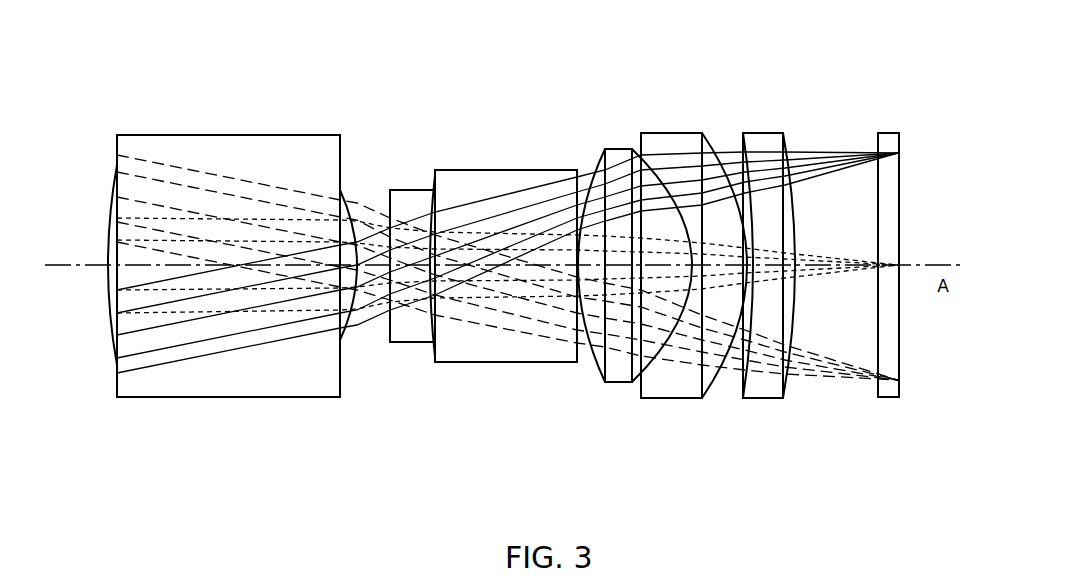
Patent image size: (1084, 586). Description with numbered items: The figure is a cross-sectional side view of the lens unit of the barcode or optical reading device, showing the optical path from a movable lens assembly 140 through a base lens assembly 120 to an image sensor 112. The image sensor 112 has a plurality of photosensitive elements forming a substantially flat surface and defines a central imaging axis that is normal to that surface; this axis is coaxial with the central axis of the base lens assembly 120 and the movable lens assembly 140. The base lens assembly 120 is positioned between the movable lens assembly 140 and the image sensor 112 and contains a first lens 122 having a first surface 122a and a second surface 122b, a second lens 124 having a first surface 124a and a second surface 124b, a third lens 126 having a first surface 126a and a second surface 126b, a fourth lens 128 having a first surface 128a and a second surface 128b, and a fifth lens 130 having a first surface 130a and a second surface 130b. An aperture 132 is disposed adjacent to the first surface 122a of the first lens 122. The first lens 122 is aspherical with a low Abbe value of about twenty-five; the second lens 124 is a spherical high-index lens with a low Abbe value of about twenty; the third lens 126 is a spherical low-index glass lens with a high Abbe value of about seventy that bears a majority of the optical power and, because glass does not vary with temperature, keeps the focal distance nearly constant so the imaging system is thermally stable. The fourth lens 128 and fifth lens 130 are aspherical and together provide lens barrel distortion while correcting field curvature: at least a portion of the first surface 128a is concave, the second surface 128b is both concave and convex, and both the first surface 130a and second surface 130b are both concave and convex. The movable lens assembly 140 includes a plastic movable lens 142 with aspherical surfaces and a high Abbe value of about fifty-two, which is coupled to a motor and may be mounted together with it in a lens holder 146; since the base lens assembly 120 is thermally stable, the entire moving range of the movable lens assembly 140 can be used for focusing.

The image sensor 112 is at (893, 201).
The base lens assembly 120 is at (719, 71).
The first lens 122 is at (418, 195).
The first surface of first lens 122a is at (389, 320).
The second surface of first lens 122b is at (431, 345).
The second lens 124 is at (508, 178).
The first surface of second lens 124a is at (431, 356).
The second surface of second lens 124b is at (576, 362).
The third lens 126 is at (617, 157).
The first surface of third lens 126a is at (604, 383).
The second surface of third lens 126b is at (633, 384).
The fourth lens 128 is at (672, 141).
The first surface of fourth lens 128a is at (640, 399).
The second surface of fourth lens 128b is at (705, 398).
The fifth lens 130 is at (763, 141).
The first surface of fifth lens 130a is at (744, 400).
The second surface of fifth lens 130b is at (788, 391).
The aperture 132 is at (385, 262).
The movable lens assembly 140 is at (198, 410).
The movable lens 142 is at (108, 250).
The lens holder 146 is at (232, 133).